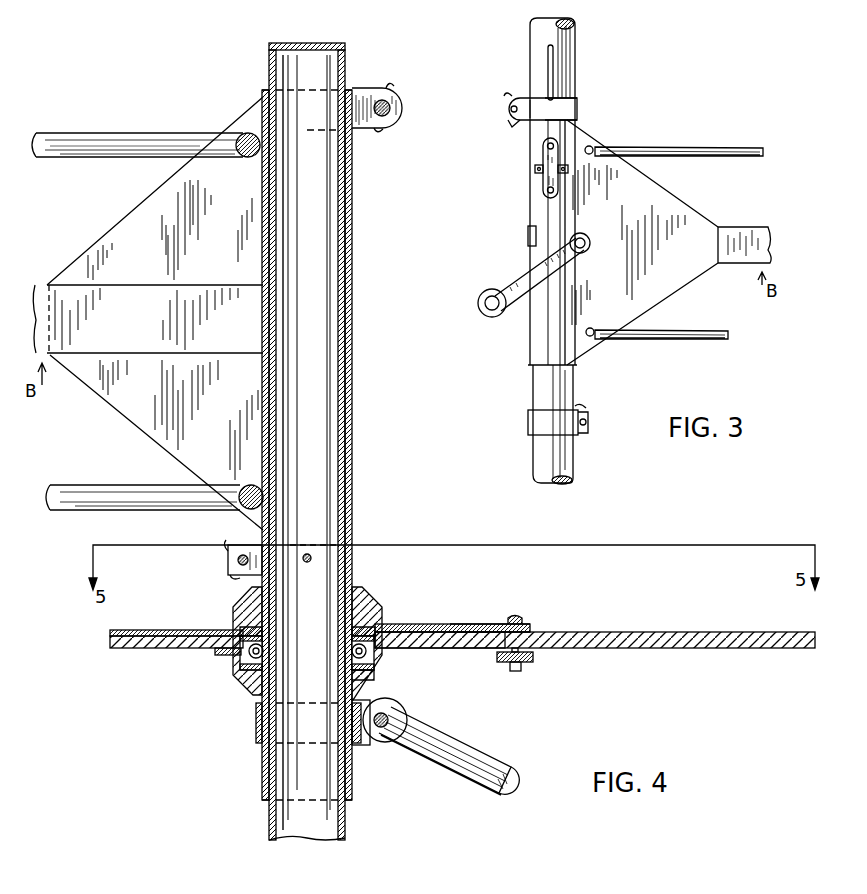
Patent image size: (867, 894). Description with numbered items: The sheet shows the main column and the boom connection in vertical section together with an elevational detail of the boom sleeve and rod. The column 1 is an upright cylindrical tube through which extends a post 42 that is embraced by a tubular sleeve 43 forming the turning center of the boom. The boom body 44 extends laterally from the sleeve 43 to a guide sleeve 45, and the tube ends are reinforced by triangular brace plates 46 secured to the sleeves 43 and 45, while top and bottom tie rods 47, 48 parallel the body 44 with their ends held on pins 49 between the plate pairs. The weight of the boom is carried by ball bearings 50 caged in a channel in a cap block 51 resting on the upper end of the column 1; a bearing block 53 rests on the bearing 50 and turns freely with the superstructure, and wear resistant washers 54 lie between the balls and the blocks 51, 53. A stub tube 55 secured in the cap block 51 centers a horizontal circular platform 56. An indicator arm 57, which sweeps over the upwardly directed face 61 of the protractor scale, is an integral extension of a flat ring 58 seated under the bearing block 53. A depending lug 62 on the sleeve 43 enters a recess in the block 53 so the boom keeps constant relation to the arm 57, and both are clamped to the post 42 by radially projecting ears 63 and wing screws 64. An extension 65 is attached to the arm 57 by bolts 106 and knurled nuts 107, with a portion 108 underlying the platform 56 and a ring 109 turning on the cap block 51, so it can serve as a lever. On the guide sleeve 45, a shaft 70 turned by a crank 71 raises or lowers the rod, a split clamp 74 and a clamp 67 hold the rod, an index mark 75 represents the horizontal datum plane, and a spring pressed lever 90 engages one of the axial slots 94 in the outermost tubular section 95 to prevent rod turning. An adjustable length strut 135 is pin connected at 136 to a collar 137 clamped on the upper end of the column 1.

In FIG. 4, the column 1 is at (352, 795).
In FIG. 4, the post 42 is at (345, 57).
In FIG. 4, the tubular sleeve 43 is at (352, 241).
In FIG. 4, the boom body 44 is at (34, 286).
In FIG. 3, the boom body 44 is at (750, 228).
In FIG. 3, the guide sleeve 45 is at (530, 212).
In FIG. 4, the triangular brace plates 46 is at (148, 214).
In FIG. 3, the triangular brace plates 46 is at (688, 272).
In FIG. 4, the top tie rod 47 is at (126, 134).
In FIG. 3, the top tie rod 47 is at (692, 148).
In FIG. 4, the bottom tie rod 48 is at (88, 486).
In FIG. 3, the bottom tie rod 48 is at (716, 339).
In FIG. 4, the pins 49 is at (240, 134).
In FIG. 3, the pins 49 is at (593, 148).
In FIG. 4, the ball bearings 50 is at (395, 656).
In FIG. 4, the cap block 51 is at (234, 680).
In FIG. 4, the bearing block 53 is at (236, 603).
In FIG. 4, the washers 54 is at (376, 686).
In FIG. 4, the stub tube 55 is at (378, 668).
In FIG. 4, the platform 56 is at (152, 648).
In FIG. 4, the indicator arm 57 is at (410, 625).
In FIG. 4, the flat ring 58 is at (236, 624).
In FIG. 4, the protractor scale face 61 is at (490, 625).
In FIG. 4, the depending lug 62 is at (298, 546).
In FIG. 4, the ears 63 is at (372, 90).
In FIG. 3, the ears 63 is at (508, 109).
In FIG. 4, the wing screws 64 is at (392, 104).
In FIG. 3, the wing screws 64 is at (505, 117).
In FIG. 4, the extension 65 is at (692, 650).
In FIG. 3, the clamp 67 is at (528, 425).
In FIG. 3, the shaft 70 is at (586, 250).
In FIG. 3, the crank 71 is at (520, 290).
In FIG. 3, the split clamp 74 is at (565, 108).
In FIG. 3, the index mark 75 is at (528, 240).
In FIG. 3, the spring pressed lever 90 is at (543, 162).
In FIG. 3, the axial slots 94 is at (548, 60).
In FIG. 3, the outermost tubular section 95 is at (533, 390).
In FIG. 4, the bolts 106 is at (521, 618).
In FIG. 4, the knurled nuts 107 is at (534, 660).
In FIG. 4, the underlying portion 108 is at (468, 650).
In FIG. 4, the ring 109 is at (222, 657).
In FIG. 4, the adjustable length strut 135 is at (497, 765).
In FIG. 4, the pin connection 136 is at (385, 728).
In FIG. 4, the collar 137 is at (258, 730).